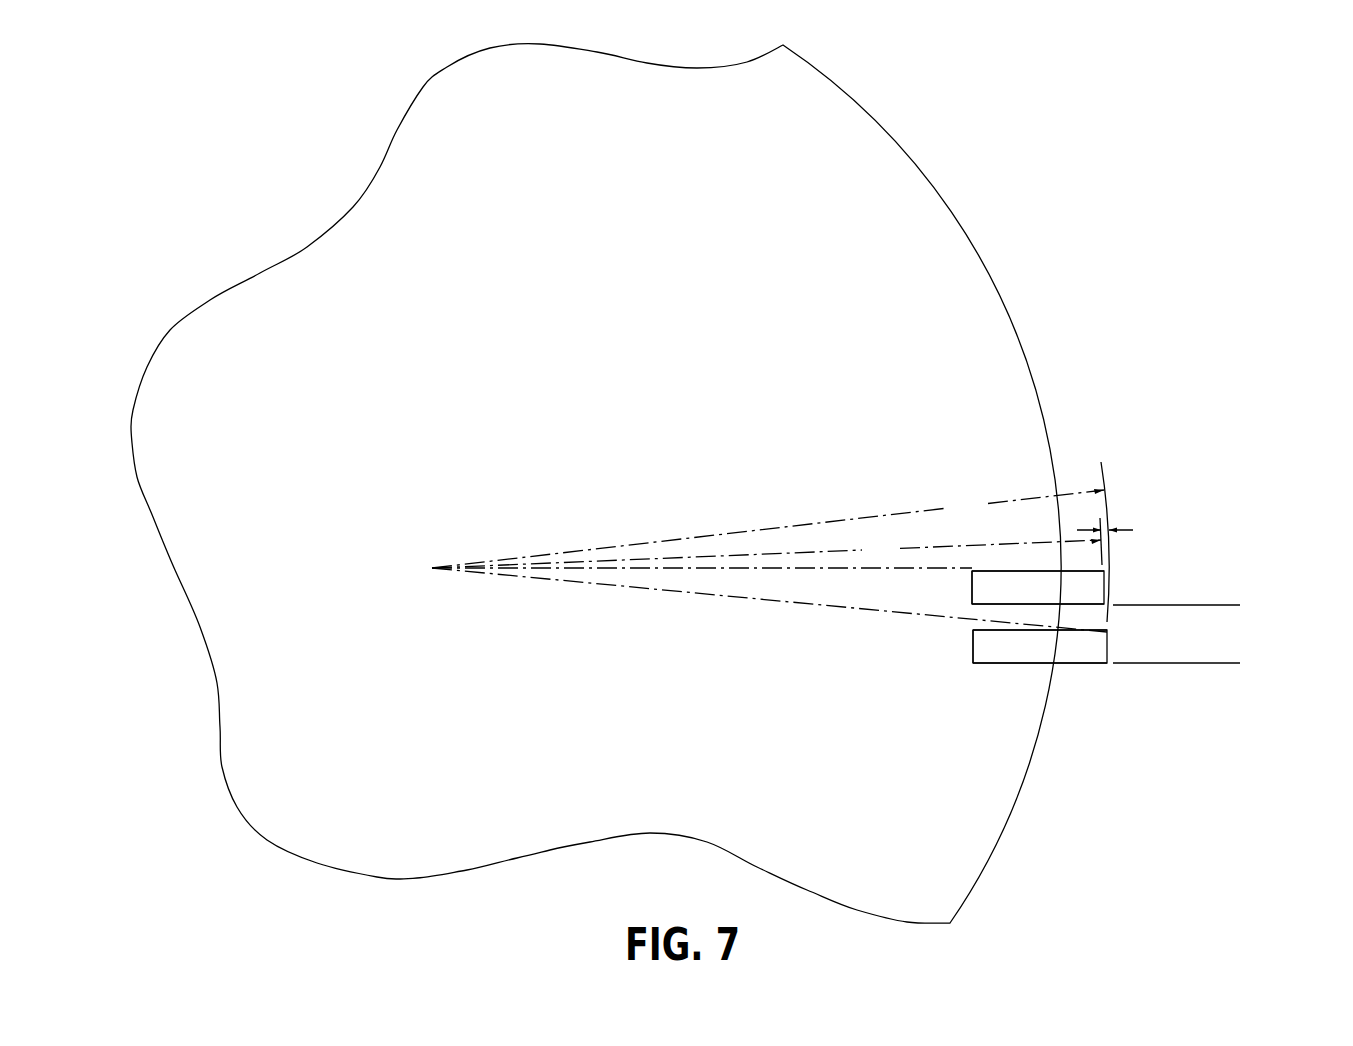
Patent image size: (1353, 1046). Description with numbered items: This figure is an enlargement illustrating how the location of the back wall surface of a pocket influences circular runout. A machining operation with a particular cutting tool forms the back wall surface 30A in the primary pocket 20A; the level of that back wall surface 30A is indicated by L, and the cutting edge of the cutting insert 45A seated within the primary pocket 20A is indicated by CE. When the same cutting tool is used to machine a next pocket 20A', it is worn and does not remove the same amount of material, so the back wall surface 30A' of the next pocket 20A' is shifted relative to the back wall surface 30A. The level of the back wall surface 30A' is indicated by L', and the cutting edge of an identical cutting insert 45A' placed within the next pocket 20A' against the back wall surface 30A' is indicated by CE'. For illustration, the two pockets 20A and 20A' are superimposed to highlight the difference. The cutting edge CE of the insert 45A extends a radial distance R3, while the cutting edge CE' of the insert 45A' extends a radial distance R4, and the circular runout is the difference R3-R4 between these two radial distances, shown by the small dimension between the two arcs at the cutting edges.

The radial distance R3 is at (770, 542).
The radial distance R4 is at (767, 543).
The circular runout R3-R4 is at (1130, 528).
The cutting edge CE' is at (1098, 570).
The cutting edge CE is at (868, 615).
The level of the back wall surface L' is at (1196, 579).
The level of the back wall surface L is at (1194, 690).
The cutting insert 45A' is at (874, 614).
The back wall surface 30A' is at (931, 647).
The next pocket 20A' is at (954, 659).
The cutting insert 45A is at (929, 699).
The primary pocket 20A is at (1027, 726).
The back wall surface 30A is at (1040, 703).